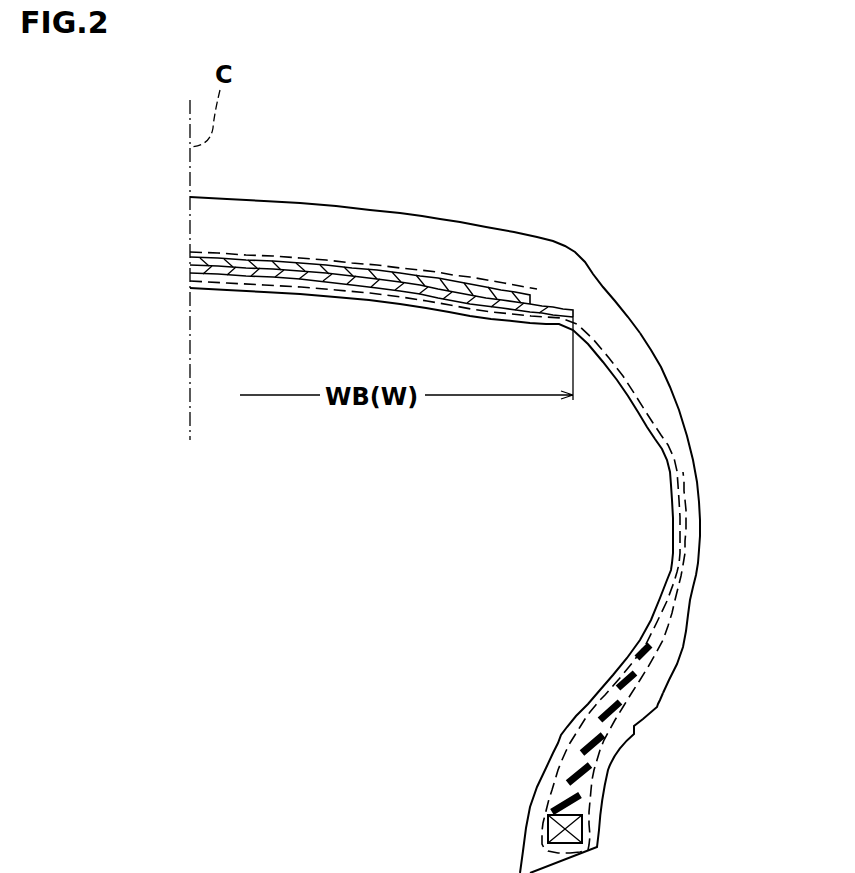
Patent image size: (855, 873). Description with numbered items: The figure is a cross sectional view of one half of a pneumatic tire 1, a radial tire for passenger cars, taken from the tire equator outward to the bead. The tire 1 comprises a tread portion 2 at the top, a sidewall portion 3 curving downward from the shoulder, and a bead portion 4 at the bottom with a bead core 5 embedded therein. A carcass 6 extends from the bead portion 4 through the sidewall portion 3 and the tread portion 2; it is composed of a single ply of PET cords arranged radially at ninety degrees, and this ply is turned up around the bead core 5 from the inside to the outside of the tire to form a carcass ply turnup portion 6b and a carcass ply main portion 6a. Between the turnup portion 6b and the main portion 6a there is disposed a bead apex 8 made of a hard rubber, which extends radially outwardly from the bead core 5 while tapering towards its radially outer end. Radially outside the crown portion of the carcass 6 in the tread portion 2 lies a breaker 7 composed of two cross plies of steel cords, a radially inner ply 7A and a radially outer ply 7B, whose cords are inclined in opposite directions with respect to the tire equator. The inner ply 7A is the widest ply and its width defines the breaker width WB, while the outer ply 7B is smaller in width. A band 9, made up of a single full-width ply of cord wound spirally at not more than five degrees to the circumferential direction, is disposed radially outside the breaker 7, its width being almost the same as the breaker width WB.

The pneumatic tire 1 is at (652, 287).
The tread portion 2 is at (495, 205).
The sidewall portion 3 is at (715, 443).
The bead portion 4 is at (523, 737).
The bead core 5 is at (548, 826).
The carcass 6 is at (438, 567).
The carcass ply main portion 6a is at (670, 473).
The carcass ply turnup portion 6b is at (680, 508).
The breaker 7 is at (381, 188).
The radially inner ply 7A is at (297, 272).
The radially outer ply 7B is at (358, 271).
The bead apex 8 is at (597, 717).
The band 9 is at (490, 277).